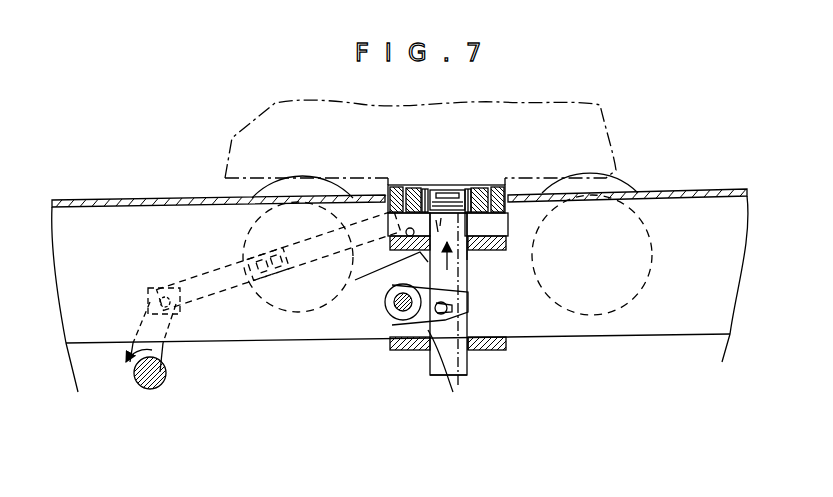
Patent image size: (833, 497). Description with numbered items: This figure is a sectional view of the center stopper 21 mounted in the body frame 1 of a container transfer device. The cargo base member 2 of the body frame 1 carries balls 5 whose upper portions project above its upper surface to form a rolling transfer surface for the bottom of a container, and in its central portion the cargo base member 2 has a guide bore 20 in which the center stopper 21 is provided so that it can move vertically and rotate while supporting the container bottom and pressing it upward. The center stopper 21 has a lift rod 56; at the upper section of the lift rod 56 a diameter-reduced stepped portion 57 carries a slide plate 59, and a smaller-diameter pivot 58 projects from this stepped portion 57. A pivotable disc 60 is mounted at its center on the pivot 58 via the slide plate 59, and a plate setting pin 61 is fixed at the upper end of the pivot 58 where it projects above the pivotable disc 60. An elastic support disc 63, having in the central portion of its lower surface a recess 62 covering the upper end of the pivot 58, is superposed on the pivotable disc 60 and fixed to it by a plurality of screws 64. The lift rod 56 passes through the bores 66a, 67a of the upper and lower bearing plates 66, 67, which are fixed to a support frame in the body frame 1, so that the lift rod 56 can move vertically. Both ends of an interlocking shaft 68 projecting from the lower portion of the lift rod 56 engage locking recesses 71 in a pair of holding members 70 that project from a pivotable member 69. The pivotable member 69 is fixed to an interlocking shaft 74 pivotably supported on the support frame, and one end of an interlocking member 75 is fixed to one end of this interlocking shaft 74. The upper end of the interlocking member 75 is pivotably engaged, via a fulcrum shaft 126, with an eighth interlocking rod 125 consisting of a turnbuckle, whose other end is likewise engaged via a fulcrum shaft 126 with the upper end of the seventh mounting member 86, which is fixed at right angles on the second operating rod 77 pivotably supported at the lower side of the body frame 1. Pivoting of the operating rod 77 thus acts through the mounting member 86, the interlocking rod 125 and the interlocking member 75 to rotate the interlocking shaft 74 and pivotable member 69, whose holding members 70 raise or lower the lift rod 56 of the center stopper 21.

The body frame 1 is at (732, 254).
The cargo base member 2 is at (166, 198).
The balls 5 is at (288, 185).
The guide bore 20 is at (388, 182).
The center stopper 21 is at (514, 189).
The lift rod 56 is at (458, 268).
The diameter-reduced stepped portion 57 is at (468, 252).
The pivot 58 is at (447, 192).
The slide plate 59 is at (470, 190).
The pivotable disc 60 is at (510, 215).
The plate setting pin 61 is at (425, 190).
The recess 62 is at (480, 190).
The elastic support disc 63 is at (412, 190).
The screws 64 is at (395, 190).
The upper bearing plate 66 is at (508, 243).
The bore 66a is at (418, 250).
The lower bearing plate 67 is at (508, 343).
The bore 67a is at (470, 347).
The interlocking shaft 68 is at (428, 343).
The pivotable member 69 is at (391, 318).
The holding members 70 is at (447, 377).
The locking recesses 71 is at (448, 309).
The interlocking shaft 74 is at (395, 300).
The interlocking member 75 is at (398, 322).
The second operating rod 77 is at (152, 391).
The seventh mounting member 86 is at (183, 352).
The eighth interlocking rod 125 is at (272, 255).
The fulcrum shafts 126 is at (162, 298).